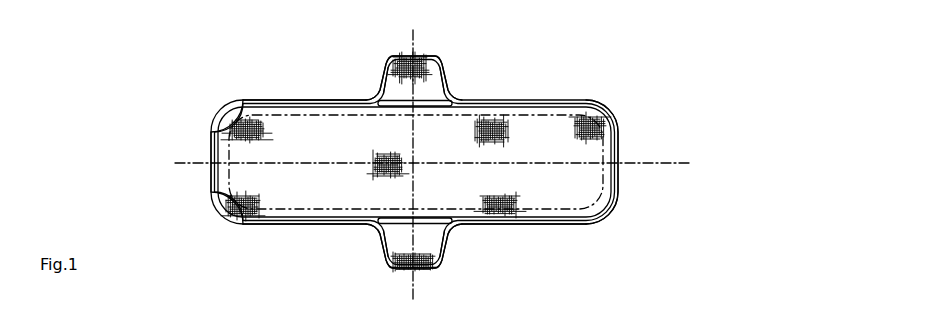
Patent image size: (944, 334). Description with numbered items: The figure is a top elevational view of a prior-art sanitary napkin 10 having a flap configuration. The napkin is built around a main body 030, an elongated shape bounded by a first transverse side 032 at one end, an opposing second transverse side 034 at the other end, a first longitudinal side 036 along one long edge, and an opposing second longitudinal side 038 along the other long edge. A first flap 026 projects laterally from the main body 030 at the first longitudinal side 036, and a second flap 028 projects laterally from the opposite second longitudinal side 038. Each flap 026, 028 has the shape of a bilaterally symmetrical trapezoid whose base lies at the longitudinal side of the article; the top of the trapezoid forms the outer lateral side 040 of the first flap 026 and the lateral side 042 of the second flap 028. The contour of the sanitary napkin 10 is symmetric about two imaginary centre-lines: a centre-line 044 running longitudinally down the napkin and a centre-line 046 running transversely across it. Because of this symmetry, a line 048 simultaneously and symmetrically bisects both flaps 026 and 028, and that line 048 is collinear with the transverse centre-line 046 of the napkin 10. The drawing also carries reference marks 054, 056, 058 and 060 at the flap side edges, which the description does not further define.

The sanitary napkin 10 is at (618, 95).
The first flap 026 is at (447, 60).
The second flap 028 is at (455, 268).
The main body 030 is at (571, 228).
The first transverse side 032 is at (622, 150).
The second transverse side 034 is at (212, 150).
The first longitudinal side 036 is at (263, 96).
The second longitudinal side 038 is at (270, 228).
The lateral side of first flap 040 is at (405, 57).
The lateral side of second flap 042 is at (410, 272).
The longitudinal centre-line 044 is at (430, 163).
The transverse centre-line 046 is at (413, 89).
The bisecting line 048 is at (415, 241).
The first tab side edge 054 is at (440, 70).
The first tab side edge 056 is at (395, 73).
The second tab side edge 058 is at (447, 252).
The second tab side edge 060 is at (385, 257).